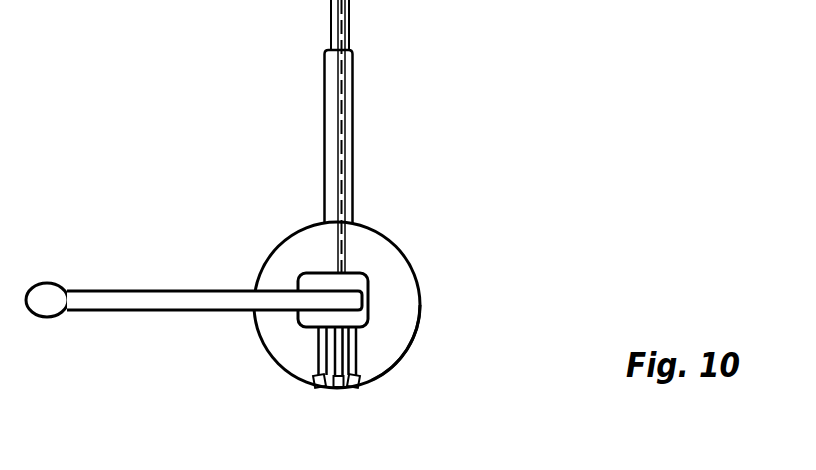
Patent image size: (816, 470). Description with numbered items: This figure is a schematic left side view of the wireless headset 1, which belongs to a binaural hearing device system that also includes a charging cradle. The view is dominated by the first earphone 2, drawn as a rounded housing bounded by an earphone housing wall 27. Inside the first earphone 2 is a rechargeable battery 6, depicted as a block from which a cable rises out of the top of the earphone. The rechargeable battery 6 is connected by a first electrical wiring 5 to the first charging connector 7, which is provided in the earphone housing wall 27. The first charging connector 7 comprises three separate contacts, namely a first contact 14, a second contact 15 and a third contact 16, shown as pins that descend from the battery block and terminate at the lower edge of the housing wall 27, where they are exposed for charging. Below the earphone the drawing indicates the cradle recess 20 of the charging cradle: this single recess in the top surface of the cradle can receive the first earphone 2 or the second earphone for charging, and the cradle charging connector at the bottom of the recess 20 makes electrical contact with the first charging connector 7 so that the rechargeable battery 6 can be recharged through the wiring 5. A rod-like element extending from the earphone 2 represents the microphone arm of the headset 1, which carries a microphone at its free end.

The wireless headset 1 is at (430, 89).
The first earphone 2 is at (398, 278).
The first electrical wiring 5 is at (376, 338).
The rechargeable battery 6 is at (315, 282).
The first charging connector 7 is at (261, 365).
The first contact 14 is at (316, 388).
The second contact 15 is at (336, 388).
The third contact 16 is at (355, 388).
The cradle recess 20 is at (377, 469).
The earphone housing wall 27 is at (383, 380).